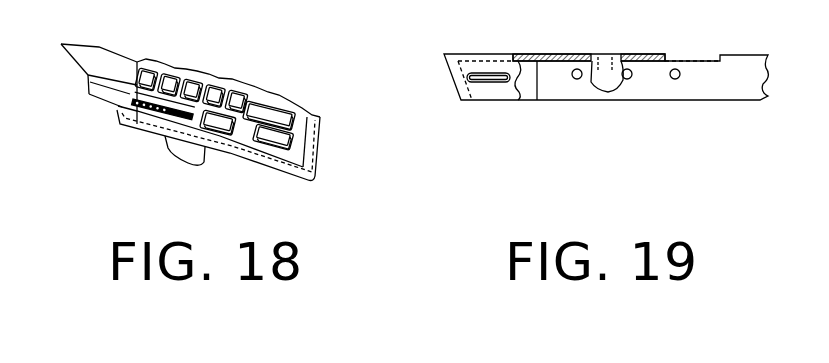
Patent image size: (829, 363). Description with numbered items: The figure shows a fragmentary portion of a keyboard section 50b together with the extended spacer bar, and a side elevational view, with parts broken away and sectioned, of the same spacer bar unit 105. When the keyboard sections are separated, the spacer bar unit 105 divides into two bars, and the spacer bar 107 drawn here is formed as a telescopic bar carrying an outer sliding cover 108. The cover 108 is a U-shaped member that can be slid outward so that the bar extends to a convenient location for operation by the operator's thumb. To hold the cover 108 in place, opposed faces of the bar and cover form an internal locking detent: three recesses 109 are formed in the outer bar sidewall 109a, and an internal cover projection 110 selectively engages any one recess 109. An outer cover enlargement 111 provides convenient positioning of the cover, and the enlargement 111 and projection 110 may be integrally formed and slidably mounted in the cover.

In FIG. 18, the spacer bar unit 105 is at (108, 133).
In FIG. 18, the spacer bar 107 is at (123, 95).
In FIG. 19, the spacer bar 107 is at (545, 104).
In FIG. 18, the keyboard section 50b is at (179, 155).
In FIG. 19, the outer sliding cover 108 is at (605, 68).
In FIG. 19, the recesses 109 is at (676, 86).
In FIG. 19, the outer bar sidewall 109a is at (735, 94).
In FIG. 19, the internal cover projection 110 is at (646, 49).
In FIG. 19, the outer cover enlargement 111 is at (496, 90).